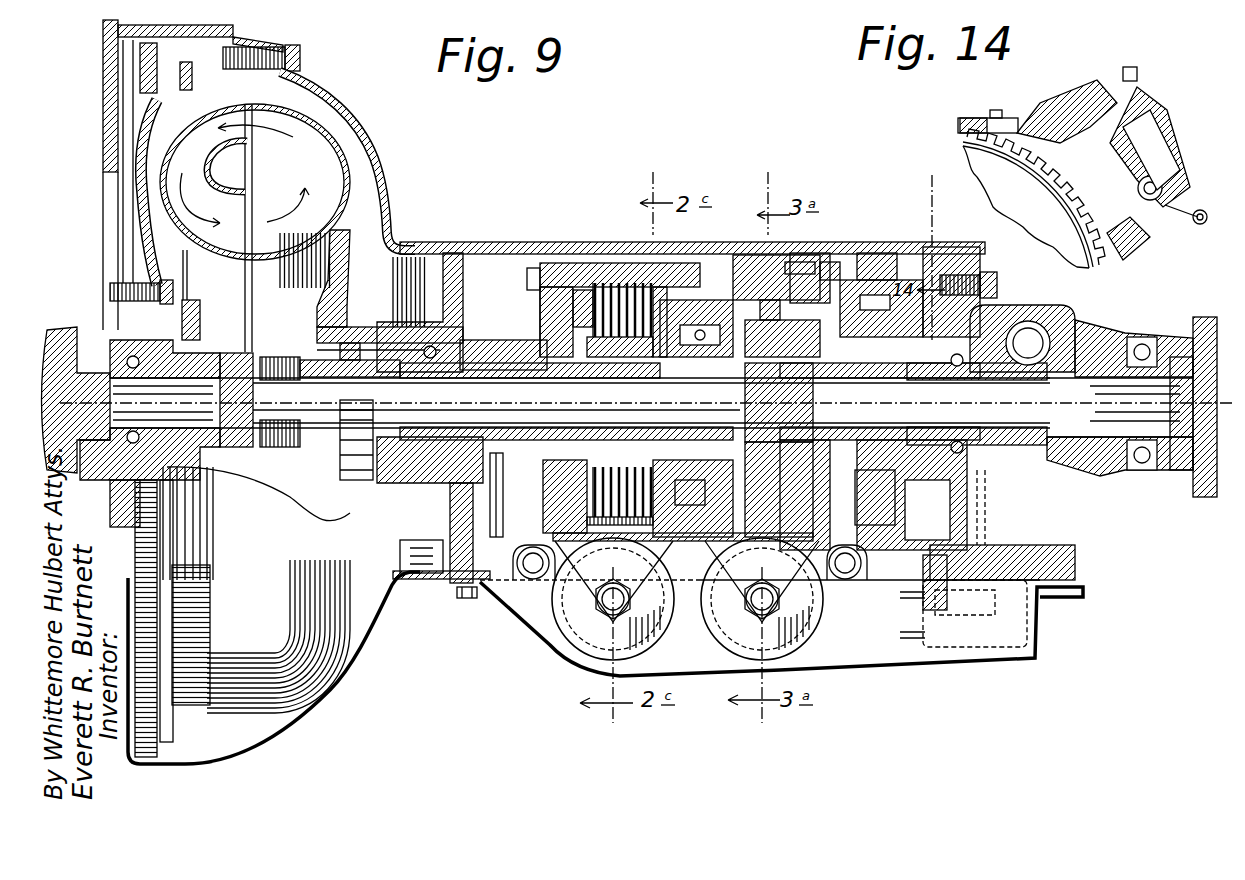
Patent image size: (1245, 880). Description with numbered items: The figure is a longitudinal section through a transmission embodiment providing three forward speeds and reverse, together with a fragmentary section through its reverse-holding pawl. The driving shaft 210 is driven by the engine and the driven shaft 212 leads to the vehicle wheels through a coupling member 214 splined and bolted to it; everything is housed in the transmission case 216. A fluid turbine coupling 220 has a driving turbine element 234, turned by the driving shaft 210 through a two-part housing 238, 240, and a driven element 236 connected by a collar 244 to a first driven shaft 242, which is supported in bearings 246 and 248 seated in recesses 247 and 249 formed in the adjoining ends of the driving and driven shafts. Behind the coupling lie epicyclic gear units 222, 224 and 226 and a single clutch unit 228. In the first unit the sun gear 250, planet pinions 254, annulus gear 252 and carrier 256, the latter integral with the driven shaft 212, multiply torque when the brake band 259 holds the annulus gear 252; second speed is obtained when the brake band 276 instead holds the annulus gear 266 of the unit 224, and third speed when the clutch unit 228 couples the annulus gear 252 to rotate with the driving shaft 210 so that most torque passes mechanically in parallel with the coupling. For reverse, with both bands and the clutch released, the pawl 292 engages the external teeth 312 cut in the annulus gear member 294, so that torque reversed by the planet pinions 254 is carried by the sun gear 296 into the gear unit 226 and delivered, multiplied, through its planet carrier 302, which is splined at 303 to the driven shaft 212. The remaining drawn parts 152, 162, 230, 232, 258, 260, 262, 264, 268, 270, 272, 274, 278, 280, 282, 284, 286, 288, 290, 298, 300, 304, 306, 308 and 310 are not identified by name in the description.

In FIG. 9, the lower shaft boss 152 is at (821, 638).
In FIG. 9, the lower shaft boss 162 is at (668, 648).
In FIG. 9, the driving shaft 210 is at (75, 290).
In FIG. 9, the driven shaft 212 is at (1077, 383).
In FIG. 9, the coupling member 214 is at (1185, 340).
In FIG. 9, the transmission case 216 is at (460, 243).
In FIG. 14, the transmission case 216 is at (1000, 124).
In FIG. 9, the fluid turbine coupling 220 is at (287, 119).
In FIG. 9, the epicyclic gear unit 222 is at (835, 285).
In FIG. 9, the epicyclic gear unit 224 is at (667, 303).
In FIG. 9, the epicyclic gear unit 226 is at (870, 300).
In FIG. 9, the clutch unit 228 is at (582, 308).
In FIG. 9, the ring gear 230 is at (720, 250).
In FIG. 9, the clutch plates 232 is at (613, 280).
In FIG. 9, the driving turbine element 234 is at (281, 180).
In FIG. 9, the driven element 236 is at (183, 159).
In FIG. 9, the two-part housing 238 is at (147, 133).
In FIG. 9, the two-part housing 240 is at (330, 110).
In FIG. 9, the first driven shaft 242 is at (412, 404).
In FIG. 9, the collar 244 is at (197, 337).
In FIG. 9, the bearing 246 is at (100, 293).
In FIG. 9, the recess 247 is at (97, 480).
In FIG. 9, the bearing 248 is at (1005, 355).
In FIG. 9, the recess 249 is at (940, 543).
In FIG. 9, the sun gear 250 is at (735, 380).
In FIG. 9, the annulus gear 252 is at (745, 310).
In FIG. 9, the planet pinions 254 is at (790, 262).
In FIG. 9, the carrier 256 is at (815, 425).
In FIG. 9, the gear element 258 is at (770, 240).
In FIG. 9, the brake band 259 is at (825, 265).
In FIG. 9, the intermediate sleeve 260 is at (658, 378).
In FIG. 9, the hub 262 is at (490, 372).
In FIG. 9, the clutch hub 264 is at (360, 360).
In FIG. 9, the annulus gear 266 is at (700, 300).
In FIG. 9, the roller 268 is at (683, 307).
In FIG. 9, the clutch plates 270 is at (613, 283).
In FIG. 9, the clutch drum 272 is at (560, 272).
In FIG. 9, the bolt 274 is at (527, 276).
In FIG. 9, the brake band 276 is at (560, 265).
In FIG. 9, the piston return spring 278 is at (590, 342).
In FIG. 9, the clutch hub 280 is at (547, 345).
In FIG. 9, the drum wall 282 is at (580, 265).
In FIG. 9, the drum flange 284 is at (540, 292).
In FIG. 9, the clutch housing 286 is at (548, 523).
In FIG. 9, the support lug 288 is at (633, 548).
In FIG. 9, the pin 290 is at (500, 500).
In FIG. 14, the pawl 292 is at (1080, 97).
In FIG. 9, the annulus gear member 294 is at (895, 270).
In FIG. 14, the annulus gear member 294 is at (990, 118).
In FIG. 9, the sun gear 296 is at (855, 432).
In FIG. 9, the gear member 298 is at (860, 290).
In FIG. 9, the bolt 300 is at (925, 260).
In FIG. 9, the planet carrier 302 is at (955, 300).
In FIG. 9, the spline 303 is at (910, 422).
In FIG. 14, the pawl 304 is at (1165, 152).
In FIG. 14, the pawl link 306 is at (1150, 110).
In FIG. 14, the pawl pivot 308 is at (1128, 82).
In FIG. 14, the ring gear teeth 310 is at (1045, 167).
In FIG. 9, the external teeth 312 is at (935, 280).
In FIG. 14, the external teeth 312 is at (1145, 243).